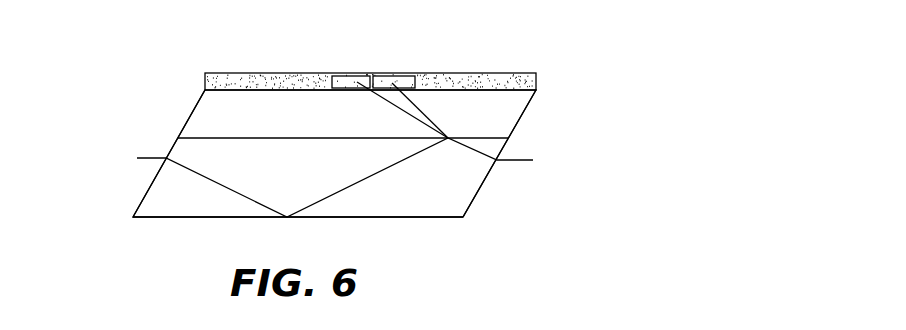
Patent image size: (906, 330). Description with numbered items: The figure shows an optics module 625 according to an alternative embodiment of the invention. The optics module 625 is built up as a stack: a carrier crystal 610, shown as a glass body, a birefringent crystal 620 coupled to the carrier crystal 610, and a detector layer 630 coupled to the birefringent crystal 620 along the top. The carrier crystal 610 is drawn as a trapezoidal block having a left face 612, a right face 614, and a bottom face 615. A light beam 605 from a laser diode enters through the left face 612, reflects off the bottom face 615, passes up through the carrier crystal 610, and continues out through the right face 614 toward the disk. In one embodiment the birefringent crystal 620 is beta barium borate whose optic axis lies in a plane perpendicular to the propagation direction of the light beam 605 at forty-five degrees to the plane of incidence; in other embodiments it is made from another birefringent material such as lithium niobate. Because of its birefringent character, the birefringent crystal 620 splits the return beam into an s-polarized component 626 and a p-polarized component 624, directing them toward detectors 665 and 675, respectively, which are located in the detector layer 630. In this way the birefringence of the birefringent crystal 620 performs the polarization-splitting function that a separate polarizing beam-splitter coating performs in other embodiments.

The light beam 605 is at (143, 157).
The carrier crystal 610 is at (256, 175).
The left entrance face of prism 612 is at (132, 208).
The right exit face of prism 614 is at (480, 197).
The bottom reflecting face of prism 615 is at (410, 218).
The birefringent crystal 620 is at (258, 128).
The p-polarized component 624 is at (430, 121).
The optics module 625 is at (455, 54).
The s-polarized component 626 is at (393, 107).
The detector layer 630 is at (222, 73).
The detector 665 is at (340, 76).
The detector 675 is at (403, 76).